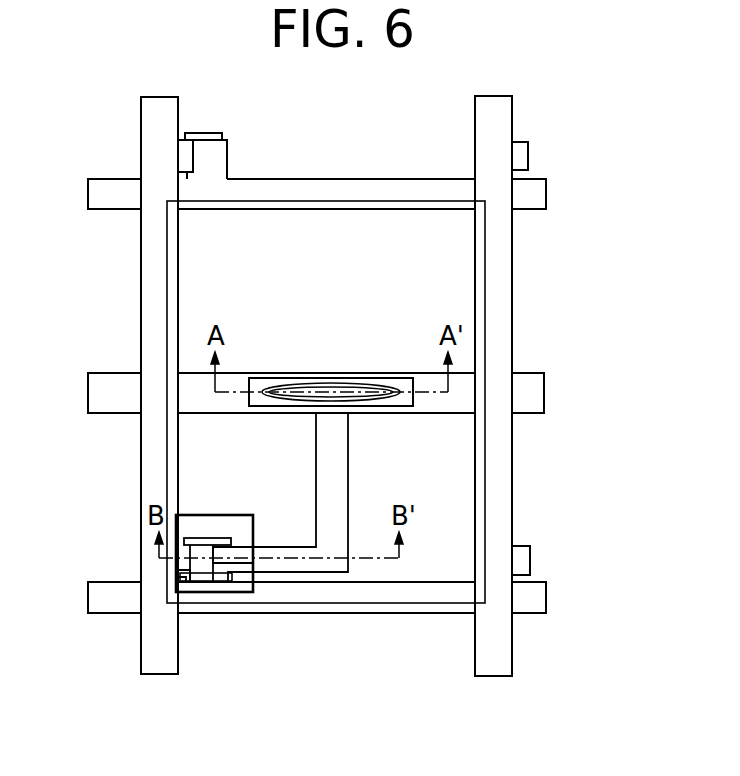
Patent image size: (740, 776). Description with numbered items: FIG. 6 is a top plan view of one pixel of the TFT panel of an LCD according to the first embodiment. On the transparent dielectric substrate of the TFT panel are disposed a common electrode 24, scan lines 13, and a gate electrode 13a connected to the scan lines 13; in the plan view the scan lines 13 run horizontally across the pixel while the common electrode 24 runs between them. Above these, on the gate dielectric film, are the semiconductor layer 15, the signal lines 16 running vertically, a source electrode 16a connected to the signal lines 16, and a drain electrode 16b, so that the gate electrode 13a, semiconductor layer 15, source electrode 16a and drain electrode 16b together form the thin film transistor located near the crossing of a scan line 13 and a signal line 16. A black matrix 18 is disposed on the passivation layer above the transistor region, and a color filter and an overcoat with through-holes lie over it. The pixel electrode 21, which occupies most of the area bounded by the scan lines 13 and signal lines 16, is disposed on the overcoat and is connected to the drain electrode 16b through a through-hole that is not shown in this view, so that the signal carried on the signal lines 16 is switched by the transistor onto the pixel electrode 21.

The scan lines 13 is at (530, 193).
The gate electrode 13a is at (203, 538).
The semiconductor layer 15 is at (207, 567).
The signal lines 16 is at (155, 663).
The source electrode 16a is at (190, 562).
The drain electrode 16b is at (322, 563).
The black matrix 18 is at (237, 592).
The pixel electrode 21 is at (485, 470).
The common electrode 24 is at (530, 393).